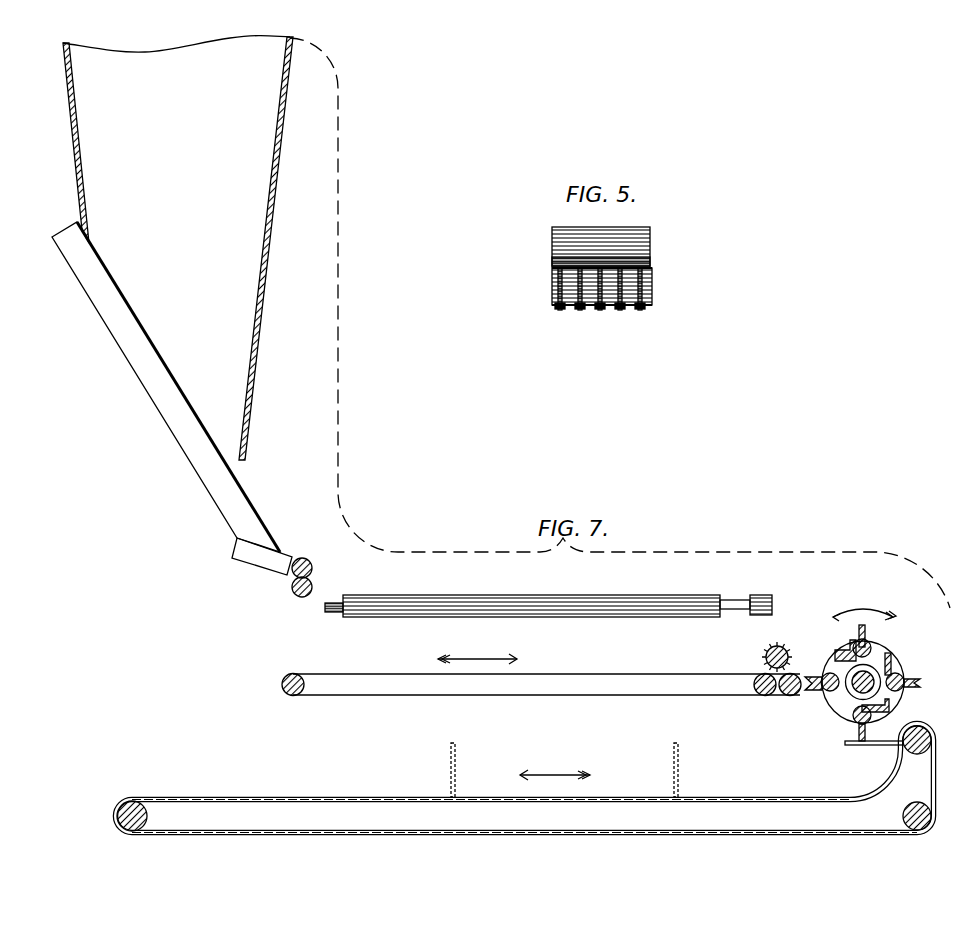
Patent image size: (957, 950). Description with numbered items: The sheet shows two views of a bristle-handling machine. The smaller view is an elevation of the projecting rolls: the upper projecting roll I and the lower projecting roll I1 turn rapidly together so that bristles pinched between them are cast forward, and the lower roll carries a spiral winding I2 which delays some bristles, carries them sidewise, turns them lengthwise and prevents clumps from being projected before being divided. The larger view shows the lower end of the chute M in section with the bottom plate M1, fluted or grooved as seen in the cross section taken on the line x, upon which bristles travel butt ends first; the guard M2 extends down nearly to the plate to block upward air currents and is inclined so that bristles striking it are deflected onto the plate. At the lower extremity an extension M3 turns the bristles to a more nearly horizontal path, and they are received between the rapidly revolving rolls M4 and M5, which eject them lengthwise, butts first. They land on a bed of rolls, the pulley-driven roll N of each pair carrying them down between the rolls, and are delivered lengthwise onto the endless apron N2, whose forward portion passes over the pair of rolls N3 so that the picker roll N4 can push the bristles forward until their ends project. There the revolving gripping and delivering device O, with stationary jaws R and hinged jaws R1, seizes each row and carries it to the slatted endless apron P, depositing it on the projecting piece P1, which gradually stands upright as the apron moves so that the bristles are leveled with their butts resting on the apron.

In FIG. 5, the projecting roll I is at (640, 250).
In FIG. 5, the lower projecting roll I1 is at (556, 306).
In FIG. 5, the spiral winding I2 is at (621, 306).
In FIG. 7, the chute M is at (175, 90).
In FIG. 7, the bottom plate M1 is at (165, 387).
In FIG. 7, the guard M2 is at (264, 268).
In FIG. 7, the extension M3 is at (232, 573).
In FIG. 7, the revolving roll M4 is at (302, 558).
In FIG. 7, the revolving roll M5 is at (270, 597).
In FIG. 7, the section line x is at (150, 337).
In FIG. 7, the roll N is at (557, 596).
In FIG. 7, the endless apron N2 is at (636, 674).
In FIG. 7, the rolls N3 is at (762, 697).
In FIG. 7, the picker roll N4 is at (777, 645).
In FIG. 7, the gripping and delivering device O is at (877, 654).
In FIG. 7, the stationary jaw R is at (857, 633).
In FIG. 7, the hinged jaw R1 is at (893, 662).
In FIG. 7, the endless apron P is at (312, 794).
In FIG. 7, the projecting piece P1 is at (470, 770).